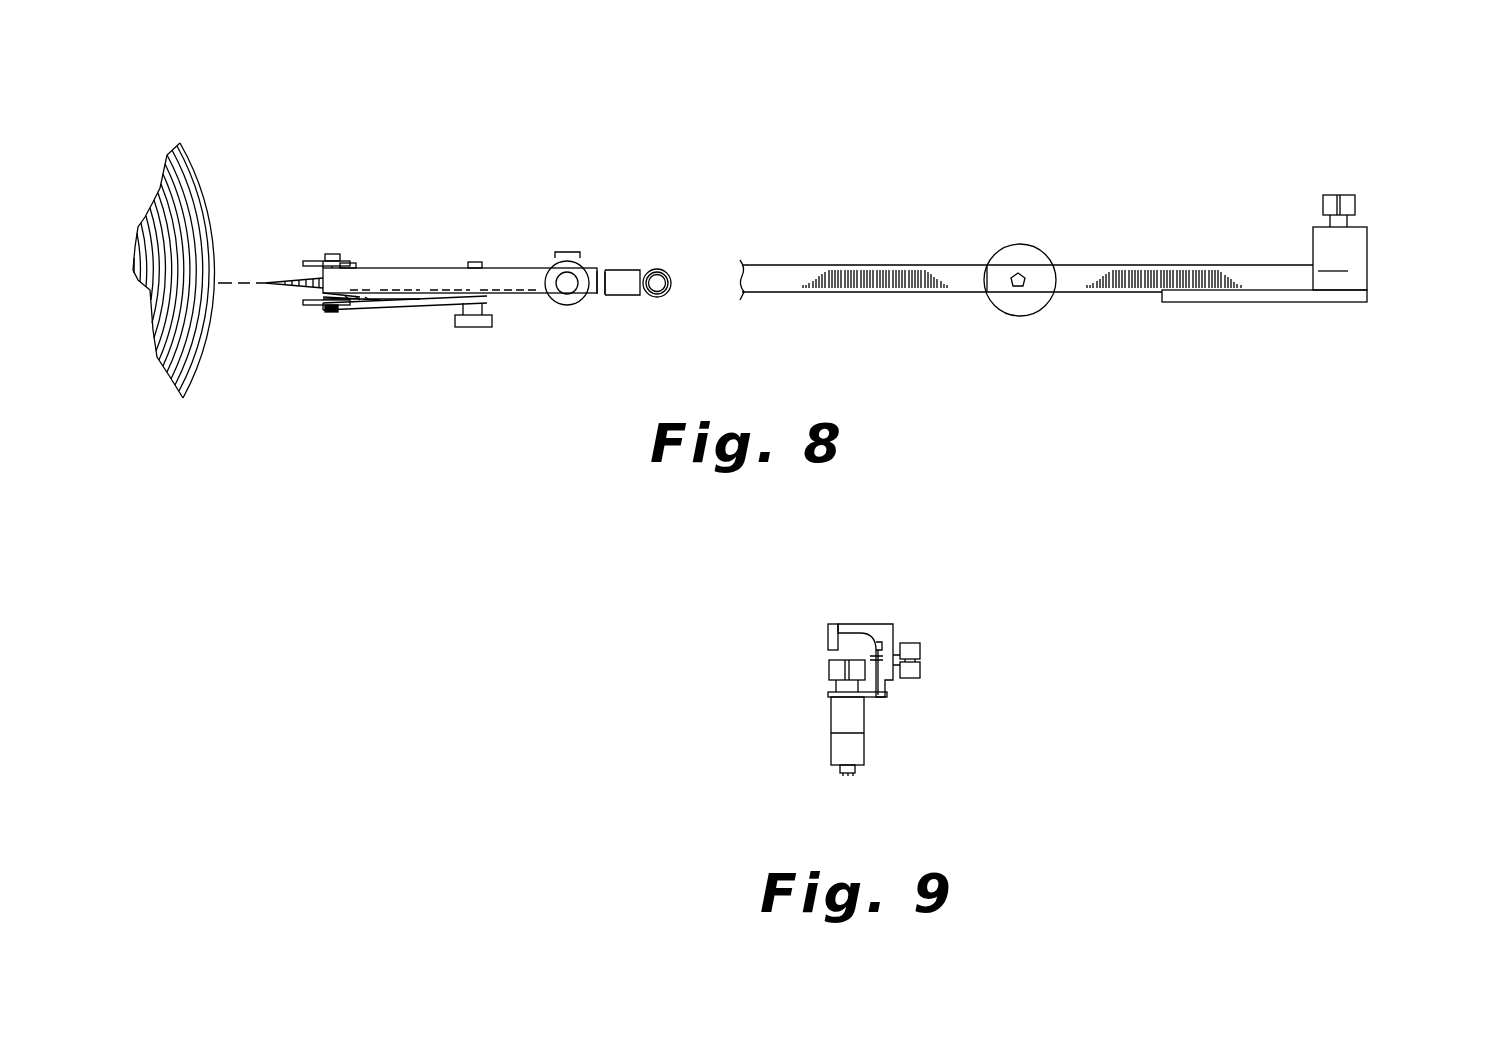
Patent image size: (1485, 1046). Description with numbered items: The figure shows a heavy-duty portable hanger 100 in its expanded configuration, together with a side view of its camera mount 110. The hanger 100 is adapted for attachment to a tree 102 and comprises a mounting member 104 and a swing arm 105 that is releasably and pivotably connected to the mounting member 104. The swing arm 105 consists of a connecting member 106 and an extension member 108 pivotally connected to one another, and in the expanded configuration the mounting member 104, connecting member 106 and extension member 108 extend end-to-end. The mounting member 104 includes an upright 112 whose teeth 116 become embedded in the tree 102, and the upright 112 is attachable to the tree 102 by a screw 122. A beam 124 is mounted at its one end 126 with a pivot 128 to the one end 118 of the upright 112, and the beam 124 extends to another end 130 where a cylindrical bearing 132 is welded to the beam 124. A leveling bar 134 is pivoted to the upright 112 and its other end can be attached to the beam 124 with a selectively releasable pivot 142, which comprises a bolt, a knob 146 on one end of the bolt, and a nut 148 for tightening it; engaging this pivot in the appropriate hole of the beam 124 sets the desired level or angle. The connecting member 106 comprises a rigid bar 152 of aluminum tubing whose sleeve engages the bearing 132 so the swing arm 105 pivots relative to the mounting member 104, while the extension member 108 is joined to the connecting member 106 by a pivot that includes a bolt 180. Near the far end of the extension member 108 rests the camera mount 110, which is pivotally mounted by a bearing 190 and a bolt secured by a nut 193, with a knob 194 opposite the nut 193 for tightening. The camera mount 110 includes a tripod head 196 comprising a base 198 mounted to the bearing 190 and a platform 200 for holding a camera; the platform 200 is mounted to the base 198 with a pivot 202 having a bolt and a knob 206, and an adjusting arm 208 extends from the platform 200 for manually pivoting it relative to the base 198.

In FIG. 8, the portable hanger 100 is at (572, 165).
In FIG. 8, the tree 102 is at (200, 177).
In FIG. 8, the mounting member 104 is at (418, 262).
In FIG. 8, the swing arm 105 is at (1112, 296).
In FIG. 8, the connecting member 106 is at (952, 264).
In FIG. 8, the extension member 108 is at (1124, 262).
In FIG. 8, the camera mount 110 is at (1372, 223).
In FIG. 9, the camera mount 110 is at (897, 620).
In FIG. 8, the upright 112 is at (351, 262).
In FIG. 8, the teeth 116 is at (306, 261).
In FIG. 8, the one end of upright 118 is at (324, 258).
In FIG. 8, the screw 122 is at (268, 281).
In FIG. 8, the beam 124 is at (551, 256).
In FIG. 8, the one end of beam 126 is at (320, 291).
In FIG. 8, the pivot 128 is at (334, 254).
In FIG. 8, the neck 130 is at (638, 298).
In FIG. 8, the cylindrical bearing 132 is at (658, 300).
In FIG. 8, the leveling bar 134 is at (390, 303).
In FIG. 8, the releasable pivot 142 is at (498, 322).
In FIG. 8, the knob 146 is at (479, 328).
In FIG. 8, the nut 148 is at (478, 262).
In FIG. 8, the rigid bar 152 is at (833, 265).
In FIG. 8, the bolt 180 is at (1024, 286).
In FIG. 9, the bearing 190 is at (866, 728).
In FIG. 9, the nut 193 is at (852, 776).
In FIG. 9, the knob 194 is at (829, 668).
In FIG. 8, the tripod head 196 is at (1312, 235).
In FIG. 9, the tripod head 196 is at (824, 623).
In FIG. 9, the base 198 is at (880, 697).
In FIG. 9, the platform 200 is at (859, 623).
In FIG. 8, the pivot 202 is at (1360, 203).
In FIG. 9, the pivot 202 is at (922, 641).
In FIG. 8, the knob 206 is at (1320, 193).
In FIG. 9, the knob 206 is at (921, 677).
In FIG. 8, the adjusting arm 208 is at (1213, 302).